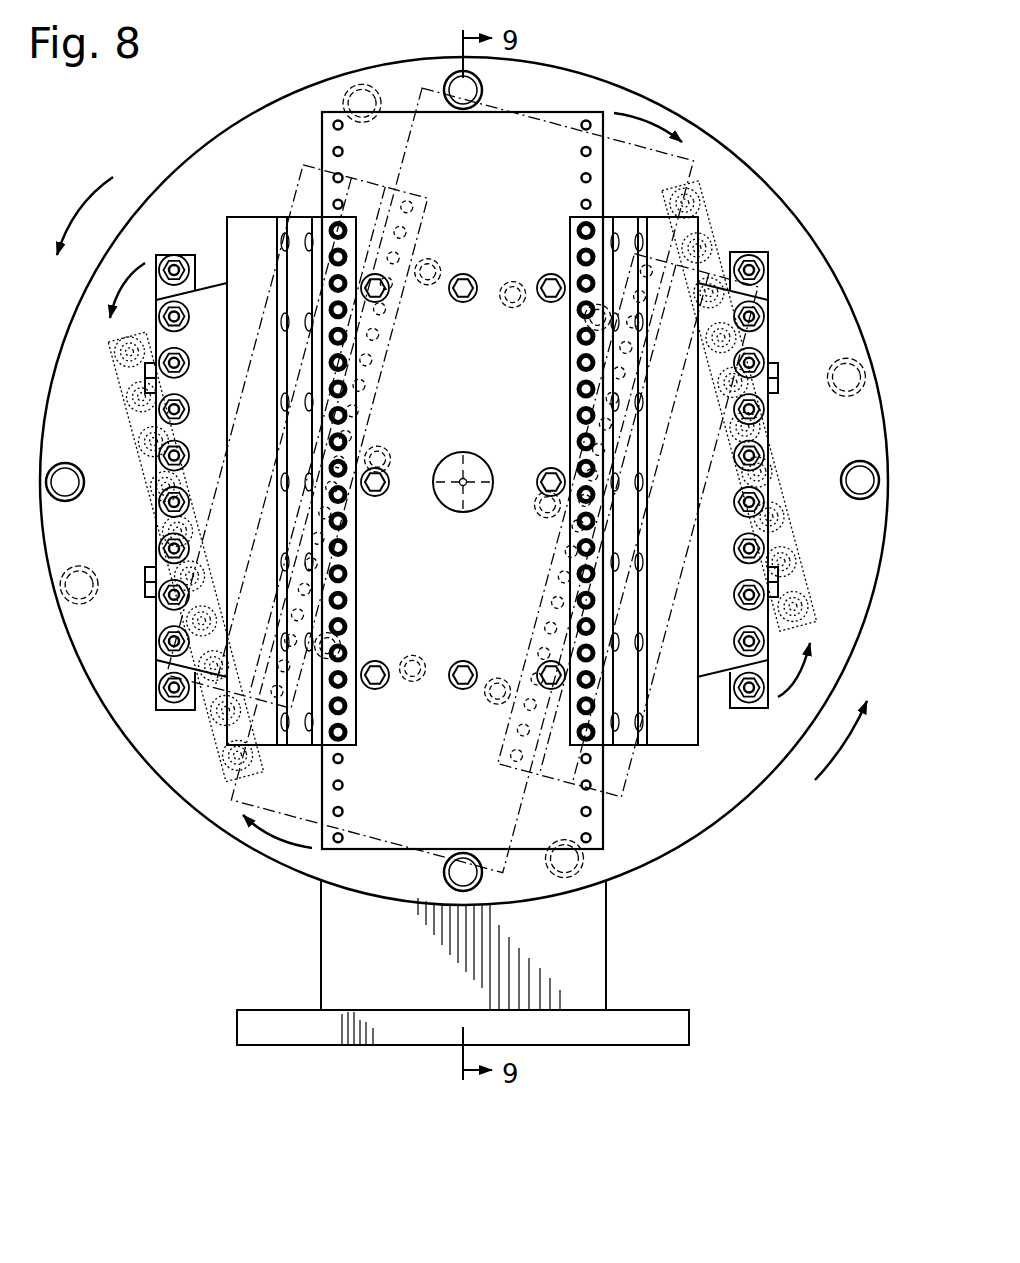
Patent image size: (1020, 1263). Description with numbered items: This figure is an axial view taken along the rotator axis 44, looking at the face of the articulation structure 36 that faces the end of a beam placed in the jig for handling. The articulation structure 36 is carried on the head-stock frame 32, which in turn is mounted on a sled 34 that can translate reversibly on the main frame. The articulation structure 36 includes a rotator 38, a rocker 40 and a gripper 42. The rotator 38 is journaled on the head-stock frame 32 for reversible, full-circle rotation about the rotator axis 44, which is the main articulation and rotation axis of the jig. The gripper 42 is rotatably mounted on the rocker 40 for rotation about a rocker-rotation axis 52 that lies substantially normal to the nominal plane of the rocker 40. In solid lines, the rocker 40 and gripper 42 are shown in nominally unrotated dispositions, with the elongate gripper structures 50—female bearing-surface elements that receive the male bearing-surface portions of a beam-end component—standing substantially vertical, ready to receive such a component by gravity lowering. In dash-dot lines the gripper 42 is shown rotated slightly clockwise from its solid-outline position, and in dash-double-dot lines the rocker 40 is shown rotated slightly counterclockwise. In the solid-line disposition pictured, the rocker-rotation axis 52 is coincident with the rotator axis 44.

The head-stock frame 32 is at (592, 913).
The sled 34 is at (627, 1012).
The articulation structure 36 is at (750, 133).
The rotator 38 is at (765, 200).
The rocker 40 is at (292, 193).
The gripper 42 is at (462, 450).
The rotator axis 44 is at (489, 465).
The gripper structures 50 is at (258, 223).
The rocker-rotation axis 52 is at (463, 480).